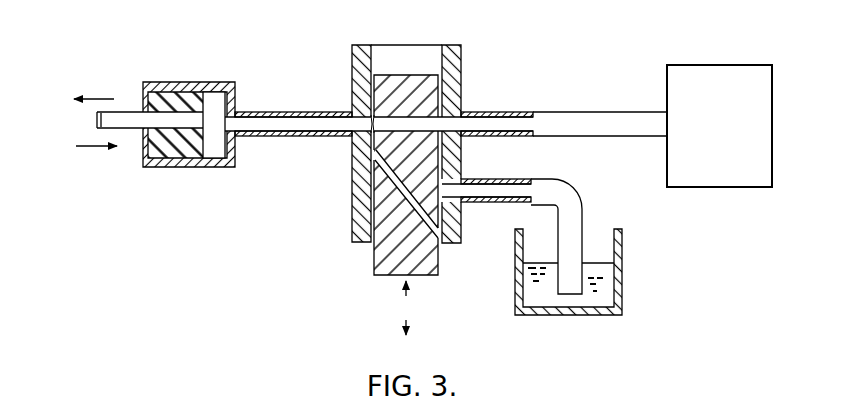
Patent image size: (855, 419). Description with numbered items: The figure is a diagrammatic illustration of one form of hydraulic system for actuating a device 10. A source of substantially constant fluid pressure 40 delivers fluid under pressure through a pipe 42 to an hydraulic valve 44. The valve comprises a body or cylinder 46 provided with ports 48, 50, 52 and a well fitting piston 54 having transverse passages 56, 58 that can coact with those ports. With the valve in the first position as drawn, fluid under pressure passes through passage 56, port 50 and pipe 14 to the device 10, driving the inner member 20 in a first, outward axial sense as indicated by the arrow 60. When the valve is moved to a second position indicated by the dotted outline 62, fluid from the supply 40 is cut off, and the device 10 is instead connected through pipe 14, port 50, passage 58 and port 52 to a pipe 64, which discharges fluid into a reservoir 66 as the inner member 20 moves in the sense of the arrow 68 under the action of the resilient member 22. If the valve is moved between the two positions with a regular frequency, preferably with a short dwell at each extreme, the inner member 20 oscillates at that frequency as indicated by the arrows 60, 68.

The device 10 is at (209, 168).
The pipe 14 is at (288, 111).
The inner member 20 is at (97, 120).
The resilient member 22 is at (167, 97).
The source of substantially constant fluid pressure 40 is at (737, 141).
The pipe 42 is at (578, 112).
The hydraulic valve 44 is at (467, 89).
The body or cylinder 46 is at (360, 193).
The port 48 is at (452, 126).
The port 50 is at (366, 120).
The port 52 is at (453, 197).
The piston 54 is at (373, 255).
The transverse passage 56 is at (419, 126).
The transverse passage 58 is at (413, 198).
The arrow 60 is at (106, 98).
The dotted outline 62 is at (402, 44).
The pipe 64 is at (580, 206).
The reservoir 66 is at (623, 266).
The arrow 68 is at (91, 151).